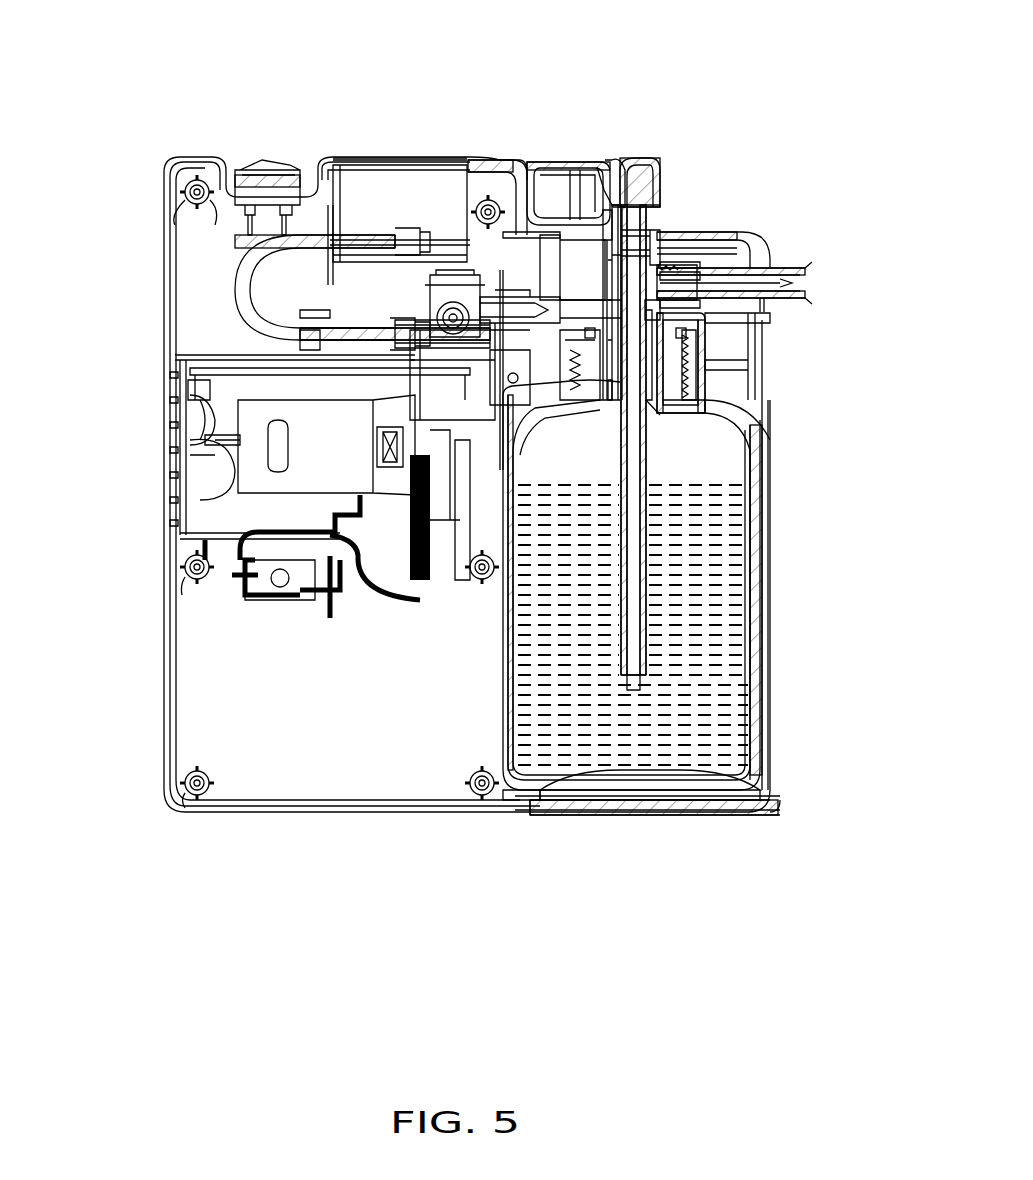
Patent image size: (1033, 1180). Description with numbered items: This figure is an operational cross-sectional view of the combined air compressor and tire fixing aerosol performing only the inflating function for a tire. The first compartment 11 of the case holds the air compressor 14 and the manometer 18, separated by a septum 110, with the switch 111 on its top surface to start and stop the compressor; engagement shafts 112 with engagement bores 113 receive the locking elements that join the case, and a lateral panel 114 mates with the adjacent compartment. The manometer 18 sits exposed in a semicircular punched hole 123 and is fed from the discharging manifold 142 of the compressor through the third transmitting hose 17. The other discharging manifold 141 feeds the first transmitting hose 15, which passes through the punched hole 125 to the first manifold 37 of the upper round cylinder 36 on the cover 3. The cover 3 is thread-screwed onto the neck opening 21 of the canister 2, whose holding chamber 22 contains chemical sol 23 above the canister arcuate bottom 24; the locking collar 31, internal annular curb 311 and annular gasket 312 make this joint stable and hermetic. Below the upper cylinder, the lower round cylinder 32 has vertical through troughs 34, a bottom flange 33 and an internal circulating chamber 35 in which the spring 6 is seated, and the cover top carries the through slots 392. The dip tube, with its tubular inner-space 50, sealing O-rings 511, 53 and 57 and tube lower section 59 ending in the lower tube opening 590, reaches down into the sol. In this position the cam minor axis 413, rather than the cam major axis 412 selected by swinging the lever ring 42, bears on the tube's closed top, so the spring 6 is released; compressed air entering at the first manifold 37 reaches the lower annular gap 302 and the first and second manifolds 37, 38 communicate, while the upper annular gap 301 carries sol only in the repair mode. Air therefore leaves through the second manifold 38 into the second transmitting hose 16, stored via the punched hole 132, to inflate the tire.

The canister 2 is at (757, 622).
The cover 3 is at (705, 322).
The spring 6 is at (757, 500).
The first compartment 11 is at (165, 180).
The air compressor 14 is at (228, 374).
The first transmitting hose 15 is at (549, 190).
The second transmitting hose 16 is at (808, 290).
The third transmitting hose 17 is at (242, 288).
The manometer 18 is at (355, 180).
The neck opening 21 is at (745, 420).
The holding chamber 22 is at (745, 450).
The chemical sol 23 is at (745, 700).
The canister arcuate bottom 24 is at (610, 790).
The locking collar 31 is at (700, 392).
The lower round cylinder 32 is at (655, 380).
The bottom flange 33 is at (240, 443).
The vertical through trough 34 is at (222, 405).
The internal circulating chamber 35 is at (215, 400).
The upper round cylinder 36 is at (660, 255).
The first manifold 37 is at (577, 215).
The second manifold 38 is at (770, 268).
The lever ring 42 is at (600, 168).
The tubular inner-space 50 is at (230, 498).
The sealing O-ring 53 is at (690, 278).
The sealing O-ring 57 is at (700, 372).
The tube lower section 59 is at (647, 640).
The septum 110 is at (228, 352).
The switch 111 is at (282, 163).
The engagement shaft 112 is at (207, 163).
The engagement bore 113 is at (185, 165).
The lateral panel 114 is at (508, 665).
The semicircular punched hole 123 is at (392, 160).
The punched hole 125 is at (493, 230).
The punched hole 132 is at (752, 248).
The discharging manifold 141 is at (474, 200).
The discharging manifold 142 is at (398, 298).
The upper annular gap 301 is at (635, 165).
The lower annular gap 302 is at (702, 304).
The internal annular curb 311 is at (737, 358).
The annular gasket 312 is at (742, 330).
The through slot 392 is at (657, 225).
The cam major axis 412 is at (623, 215).
The cam minor axis 413 is at (640, 205).
The sealing O-ring 511 is at (657, 235).
The lower tube opening 590 is at (640, 688).